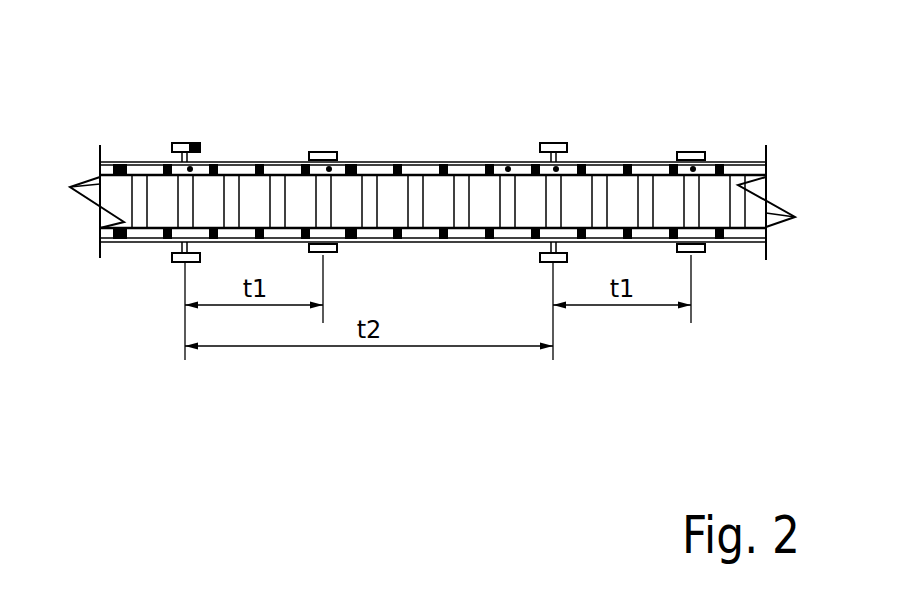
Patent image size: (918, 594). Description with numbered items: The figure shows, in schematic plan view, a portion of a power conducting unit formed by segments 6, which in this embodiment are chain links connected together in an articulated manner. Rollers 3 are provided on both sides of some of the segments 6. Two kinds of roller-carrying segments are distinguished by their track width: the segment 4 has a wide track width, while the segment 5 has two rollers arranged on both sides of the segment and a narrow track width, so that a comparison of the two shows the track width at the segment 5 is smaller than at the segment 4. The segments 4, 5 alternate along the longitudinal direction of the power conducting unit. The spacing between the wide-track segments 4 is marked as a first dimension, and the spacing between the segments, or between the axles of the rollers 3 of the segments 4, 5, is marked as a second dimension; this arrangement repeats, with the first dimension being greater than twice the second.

The roller 3 is at (159, 138).
The segment with wide track width 4 is at (433, 109).
The segment with narrow track width 5 is at (563, 149).
The segment 6 is at (549, 110).